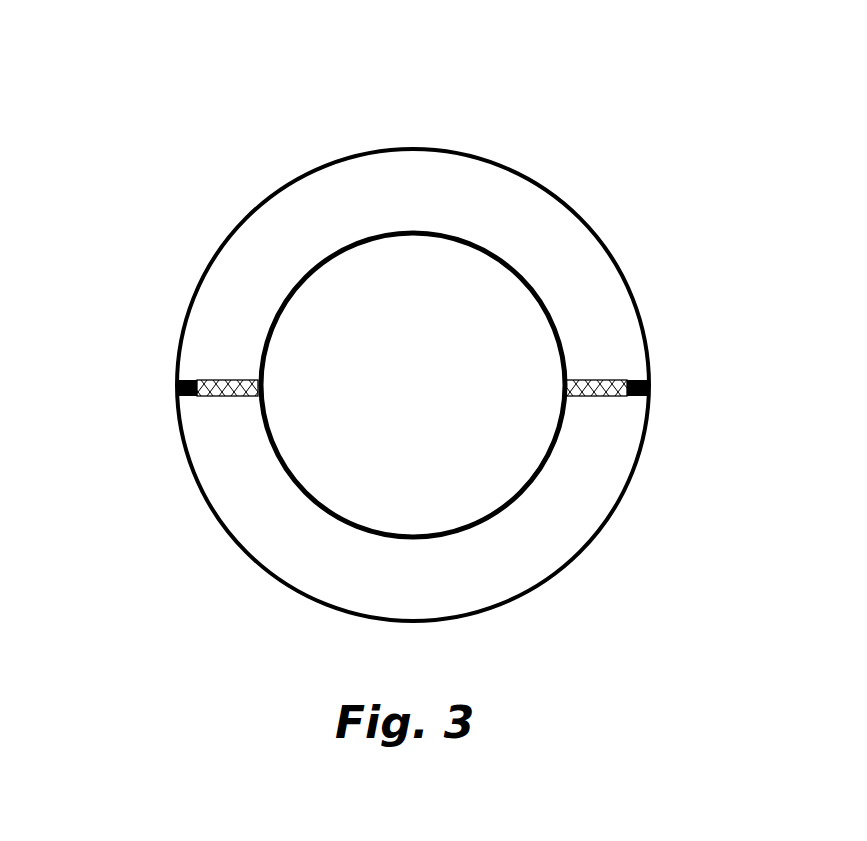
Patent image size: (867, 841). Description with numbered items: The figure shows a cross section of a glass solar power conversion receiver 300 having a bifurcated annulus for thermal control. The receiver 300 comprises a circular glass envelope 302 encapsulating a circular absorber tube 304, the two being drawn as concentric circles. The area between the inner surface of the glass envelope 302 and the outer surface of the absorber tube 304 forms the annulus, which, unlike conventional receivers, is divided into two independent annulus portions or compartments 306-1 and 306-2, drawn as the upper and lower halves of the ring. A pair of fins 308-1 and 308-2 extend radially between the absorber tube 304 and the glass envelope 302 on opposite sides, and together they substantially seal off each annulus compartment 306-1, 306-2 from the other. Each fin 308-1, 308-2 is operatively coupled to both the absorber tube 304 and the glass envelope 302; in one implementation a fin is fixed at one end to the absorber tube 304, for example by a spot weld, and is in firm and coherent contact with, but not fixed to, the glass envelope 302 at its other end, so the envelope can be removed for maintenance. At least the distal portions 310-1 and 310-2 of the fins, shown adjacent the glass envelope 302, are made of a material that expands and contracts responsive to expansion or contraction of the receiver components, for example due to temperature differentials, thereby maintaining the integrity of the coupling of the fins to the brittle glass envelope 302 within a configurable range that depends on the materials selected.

The glass solar power conversion receiver 300 is at (421, 40).
The glass envelope 302 is at (203, 255).
The absorber tube 304 is at (519, 468).
The annulus portion 306-1 is at (437, 206).
The annulus portion 306-2 is at (429, 591).
The fin 308-1 is at (255, 371).
The fin 308-2 is at (648, 371).
The distal portion 310-1 is at (192, 401).
The distal portion 310-2 is at (627, 401).